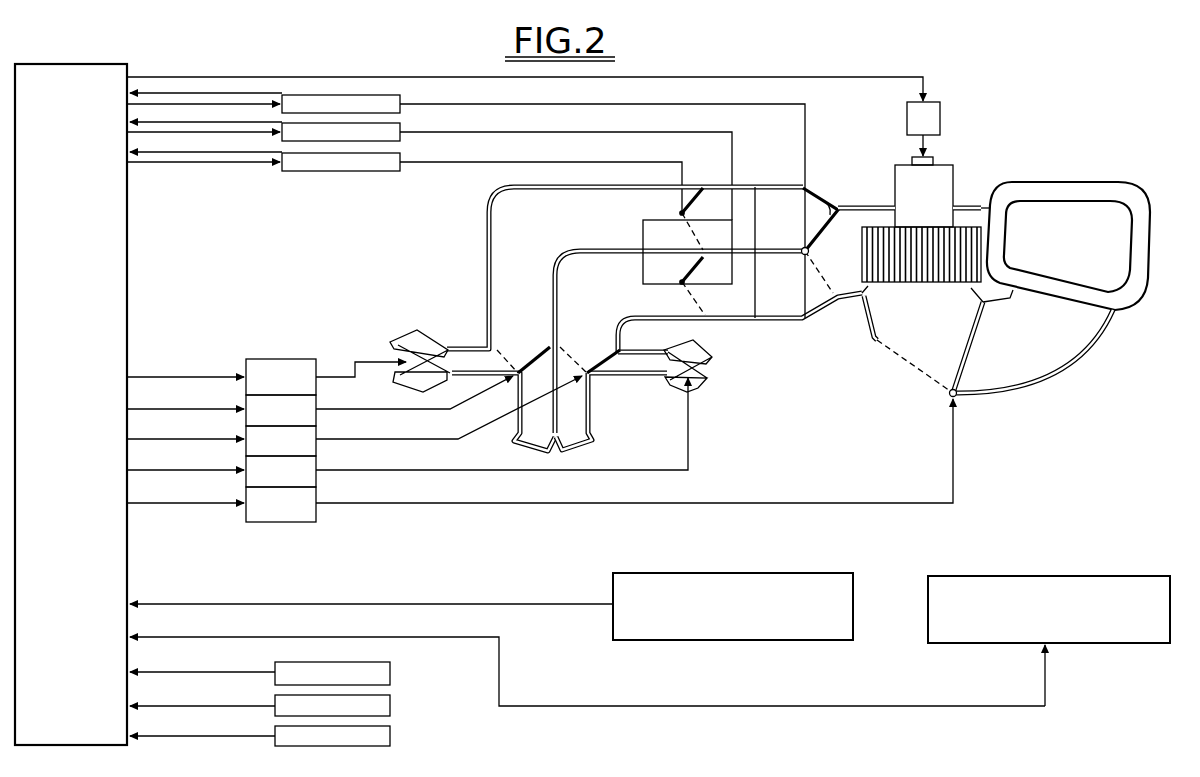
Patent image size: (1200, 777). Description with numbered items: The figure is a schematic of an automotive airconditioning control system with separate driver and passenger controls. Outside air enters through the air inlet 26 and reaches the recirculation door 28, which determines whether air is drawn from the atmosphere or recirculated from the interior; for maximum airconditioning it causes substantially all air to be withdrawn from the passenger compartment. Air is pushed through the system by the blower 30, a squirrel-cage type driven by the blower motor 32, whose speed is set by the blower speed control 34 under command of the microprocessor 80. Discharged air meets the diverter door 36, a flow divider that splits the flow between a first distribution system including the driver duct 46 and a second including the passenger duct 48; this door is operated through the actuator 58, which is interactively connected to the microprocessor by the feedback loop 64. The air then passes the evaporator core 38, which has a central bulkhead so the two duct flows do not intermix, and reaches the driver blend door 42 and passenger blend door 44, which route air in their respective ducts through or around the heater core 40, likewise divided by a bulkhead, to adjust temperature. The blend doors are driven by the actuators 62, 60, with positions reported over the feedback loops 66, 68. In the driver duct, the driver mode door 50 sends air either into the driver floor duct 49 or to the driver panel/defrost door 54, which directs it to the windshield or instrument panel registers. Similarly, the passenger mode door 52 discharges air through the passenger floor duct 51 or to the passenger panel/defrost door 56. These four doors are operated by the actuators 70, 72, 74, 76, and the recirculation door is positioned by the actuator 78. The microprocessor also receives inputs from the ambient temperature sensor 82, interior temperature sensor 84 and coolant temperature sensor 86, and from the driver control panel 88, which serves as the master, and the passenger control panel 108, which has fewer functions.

The air inlet 26 is at (1127, 252).
The recirculation door 28 is at (983, 336).
The blower 30 is at (963, 225).
The blower motor 32 is at (952, 165).
The blower speed control 34 is at (943, 111).
The diverter door 36 is at (826, 200).
The evaporator core 38 is at (766, 193).
The heater core 40 is at (648, 228).
The driver blend door 42 is at (690, 205).
The passenger blend door 44 is at (703, 318).
The driver duct 46 is at (517, 210).
The passenger duct 48 is at (577, 276).
The driver floor duct 49 is at (520, 422).
The driver mode door 50 is at (502, 337).
The passenger floor duct 51 is at (582, 413).
The passenger mode door 52 is at (573, 350).
The driver panel/defrost door 54 is at (402, 332).
The passenger panel/defrost door 56 is at (707, 369).
The actuator 58 is at (298, 95).
The actuator 60 is at (342, 123).
The actuator 62 is at (347, 172).
The feedback loop 64 is at (220, 70).
The feedback loop 66 is at (238, 122).
The feedback loop 68 is at (216, 160).
The actuator 70 is at (292, 389).
The actuator 72 is at (292, 422).
The actuator 74 is at (292, 453).
The actuator 76 is at (292, 483).
The actuator 78 is at (292, 516).
The microprocessor 80 is at (92, 191).
The ambient temperature sensor 82 is at (392, 676).
The interior temperature sensor 84 is at (392, 710).
The coolant temperature sensor 86 is at (392, 741).
The driver control panel 88 is at (678, 573).
The passenger control panel 108 is at (1047, 575).